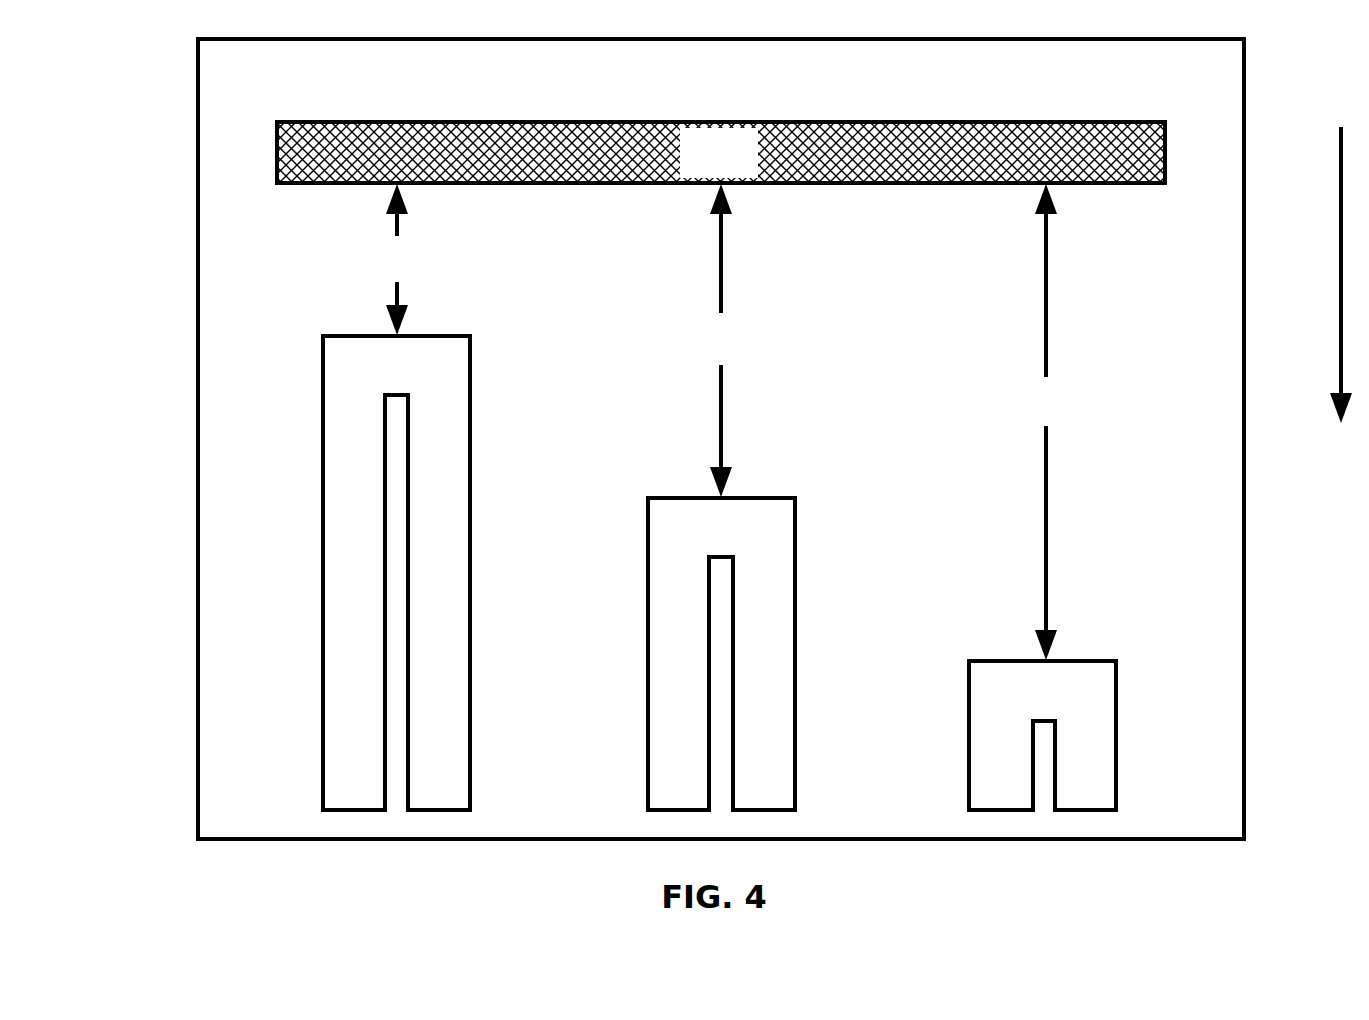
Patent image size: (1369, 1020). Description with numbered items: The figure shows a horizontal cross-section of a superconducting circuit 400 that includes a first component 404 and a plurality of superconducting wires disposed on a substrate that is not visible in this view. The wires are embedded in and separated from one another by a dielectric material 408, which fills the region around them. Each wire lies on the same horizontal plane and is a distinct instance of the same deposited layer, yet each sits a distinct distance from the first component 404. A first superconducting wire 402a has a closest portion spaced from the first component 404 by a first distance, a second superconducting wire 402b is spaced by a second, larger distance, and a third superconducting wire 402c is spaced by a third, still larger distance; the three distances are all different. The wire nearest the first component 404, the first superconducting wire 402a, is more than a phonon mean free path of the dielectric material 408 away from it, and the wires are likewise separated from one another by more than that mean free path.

The superconducting circuit 400 is at (112, 116).
The dielectric material 408 is at (721, 439).
The first component 404 is at (721, 152).
The first superconducting wire 402a is at (396, 573).
The second superconducting wire 402b is at (721, 654).
The third superconducting wire 402c is at (1042, 735).